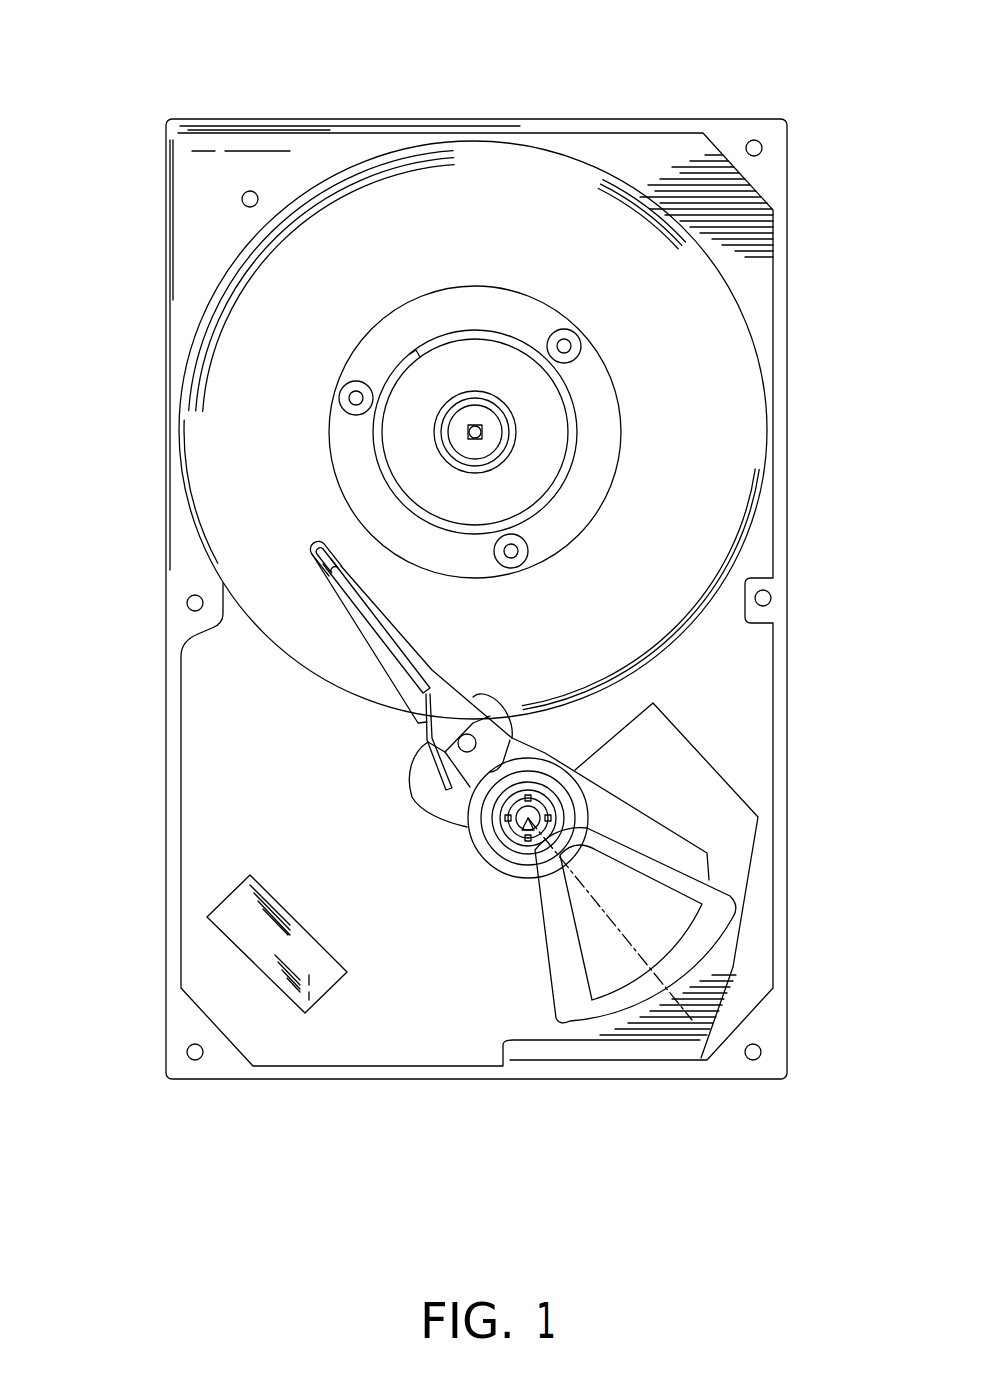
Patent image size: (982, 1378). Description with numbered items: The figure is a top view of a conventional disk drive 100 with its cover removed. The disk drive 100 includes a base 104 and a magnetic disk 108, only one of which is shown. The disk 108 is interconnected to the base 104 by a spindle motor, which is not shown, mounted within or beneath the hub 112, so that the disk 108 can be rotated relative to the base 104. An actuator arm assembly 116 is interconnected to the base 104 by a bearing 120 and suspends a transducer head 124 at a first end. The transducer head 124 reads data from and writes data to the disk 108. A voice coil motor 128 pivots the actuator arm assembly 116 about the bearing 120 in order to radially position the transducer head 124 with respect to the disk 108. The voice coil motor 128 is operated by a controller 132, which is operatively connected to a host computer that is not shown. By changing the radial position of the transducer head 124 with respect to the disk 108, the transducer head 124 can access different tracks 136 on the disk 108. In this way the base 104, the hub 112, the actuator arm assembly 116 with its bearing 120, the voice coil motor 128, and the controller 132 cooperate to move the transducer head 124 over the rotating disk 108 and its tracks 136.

The disk drive 100 is at (492, 95).
The base 104 is at (755, 690).
The magnetic disk 108 is at (738, 393).
The hub 112 is at (462, 444).
The actuator arm assembly 116 is at (353, 625).
The bearing 120 is at (527, 825).
The transducer head 124 is at (312, 562).
The voice coil motor 128 is at (593, 1010).
The controller 132 is at (252, 957).
The tracks 136 is at (748, 493).